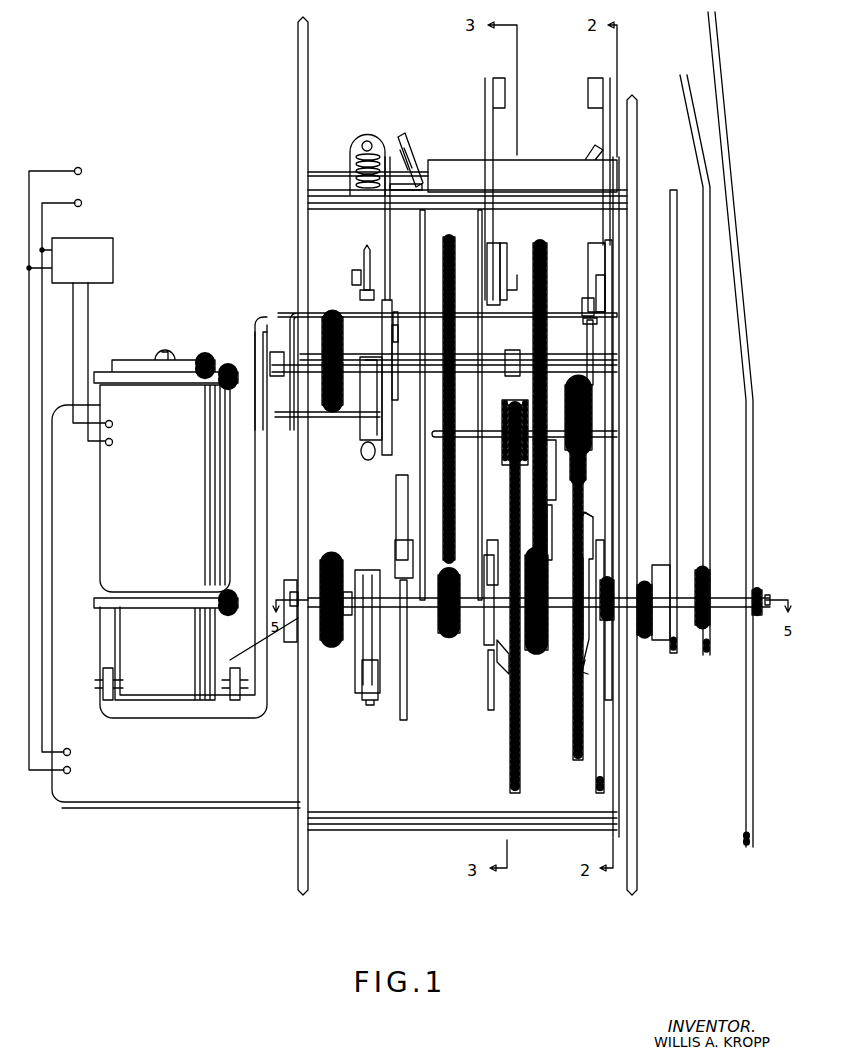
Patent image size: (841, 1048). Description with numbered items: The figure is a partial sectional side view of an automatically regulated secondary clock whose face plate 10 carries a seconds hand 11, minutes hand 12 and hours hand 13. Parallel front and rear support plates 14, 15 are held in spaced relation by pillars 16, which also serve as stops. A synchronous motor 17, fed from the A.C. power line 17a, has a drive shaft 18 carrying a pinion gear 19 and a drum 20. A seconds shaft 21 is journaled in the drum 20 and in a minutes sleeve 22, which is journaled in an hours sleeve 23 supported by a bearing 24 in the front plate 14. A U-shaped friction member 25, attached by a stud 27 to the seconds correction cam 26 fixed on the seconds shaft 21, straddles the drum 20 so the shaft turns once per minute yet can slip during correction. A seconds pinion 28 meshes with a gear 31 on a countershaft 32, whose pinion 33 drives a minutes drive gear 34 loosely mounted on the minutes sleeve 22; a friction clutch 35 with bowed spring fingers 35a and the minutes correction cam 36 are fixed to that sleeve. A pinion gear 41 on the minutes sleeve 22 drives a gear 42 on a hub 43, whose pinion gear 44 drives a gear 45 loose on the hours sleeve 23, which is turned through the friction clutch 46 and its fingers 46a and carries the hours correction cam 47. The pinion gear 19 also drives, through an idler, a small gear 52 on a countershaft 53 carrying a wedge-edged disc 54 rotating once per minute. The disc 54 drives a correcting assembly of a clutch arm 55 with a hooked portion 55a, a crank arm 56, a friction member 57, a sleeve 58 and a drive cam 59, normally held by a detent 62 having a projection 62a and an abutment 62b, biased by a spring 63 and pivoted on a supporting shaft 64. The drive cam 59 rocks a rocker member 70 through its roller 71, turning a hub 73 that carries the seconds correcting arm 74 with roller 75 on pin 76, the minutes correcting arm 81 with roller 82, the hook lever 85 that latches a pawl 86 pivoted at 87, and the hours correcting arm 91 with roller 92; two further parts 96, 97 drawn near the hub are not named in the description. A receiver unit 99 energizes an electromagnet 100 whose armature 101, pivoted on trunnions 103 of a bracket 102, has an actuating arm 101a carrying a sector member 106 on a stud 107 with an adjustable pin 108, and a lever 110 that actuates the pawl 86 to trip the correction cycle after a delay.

The face plate 10 is at (637, 134).
The seconds hand 11 is at (733, 250).
The minutes hand 12 is at (711, 416).
The hours hand 13 is at (677, 498).
The front support plate 14 is at (620, 245).
The rear support plate 15 is at (300, 65).
The pillars 16 is at (316, 188).
The motor 17 is at (50, 793).
The power line 17a is at (42, 238).
The drive shaft 18 is at (300, 598).
The pinion gear 19 is at (330, 642).
The drum 20 is at (348, 616).
The seconds shaft 21 is at (400, 610).
The minutes sleeve 22 is at (690, 590).
The hours sleeve 23 is at (603, 630).
The bearing 24 is at (640, 635).
The friction member 25 is at (358, 660).
The seconds shaft correction cam 26 is at (407, 703).
The stud 27 is at (372, 705).
The seconds pinion 28 is at (450, 634).
The gear 31 is at (455, 515).
The countershaft 32 is at (470, 431).
The pinion 33 is at (515, 402).
The minutes drive gear 34 is at (510, 778).
The friction clutch 35 is at (487, 620).
The bowed spring fingers 35a is at (497, 660).
The minutes correction cam 36 is at (488, 700).
The pinion gear 41 is at (535, 652).
The gear 42 is at (547, 269).
The hub 43 is at (548, 478).
The pinion gear 44 is at (592, 411).
The gear 45 is at (548, 530).
The friction clutch 46 is at (592, 660).
The bowed spring fingers 46a is at (582, 527).
The hours correction cam 47 is at (586, 763).
The small gear 52 is at (322, 330).
The countershaft 53 is at (322, 358).
The rotatable disc 54 is at (367, 250).
The clutch arm 55 is at (388, 451).
The hooked portion 55a is at (360, 298).
The crank arm 56 is at (383, 425).
The friction member 57 is at (380, 398).
The sleeve 58 is at (512, 353).
The drive cam 59 is at (587, 340).
The clutch arm detent 62 is at (385, 221).
The projection 62a is at (352, 278).
The abutment 62b is at (390, 197).
The spring 63 is at (356, 160).
The supporting shaft 64 is at (404, 150).
The rocker member 70 is at (604, 134).
The roller 71 is at (582, 303).
The hub 73 is at (582, 163).
The seconds correcting arm 74 is at (420, 505).
The roller 75 is at (398, 558).
The pin 76 is at (400, 545).
The minutes correcting arm 81 is at (479, 265).
The roller 82 is at (487, 545).
The hook lever 85 is at (487, 131).
The pawl 86 is at (487, 283).
The pivot 87 is at (505, 270).
The hours correcting arm 91 is at (608, 265).
The roller 92 is at (600, 558).
The plate 96 is at (597, 292).
The plate 97 is at (588, 252).
The receiver unit 99 is at (69, 271).
The electromagnet 100 is at (140, 495).
The armature 101 is at (215, 720).
The actuating arm 101a is at (255, 322).
The bracket 102 is at (289, 642).
The trunnions 103 is at (243, 668).
The sector member 106 is at (368, 458).
The stud 107 is at (272, 358).
The pin 108 is at (396, 320).
The lever 110 is at (296, 312).